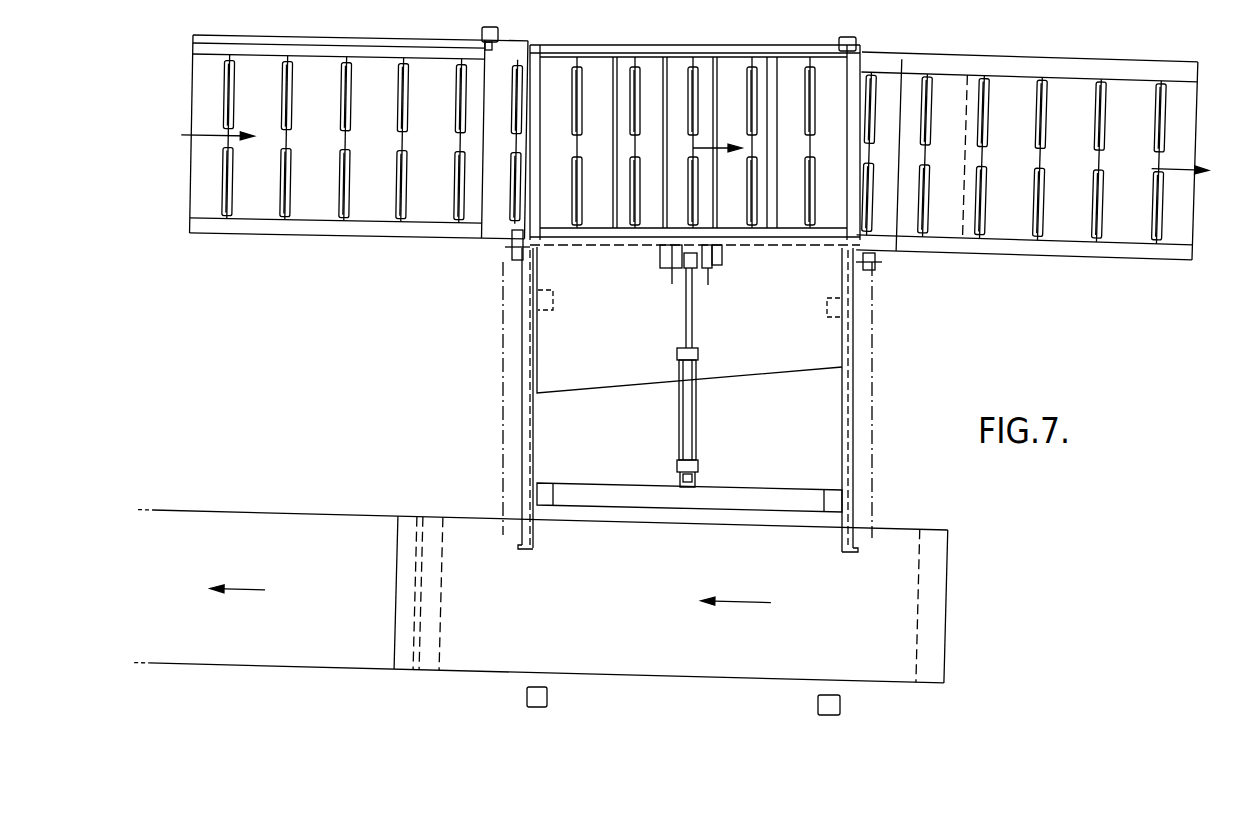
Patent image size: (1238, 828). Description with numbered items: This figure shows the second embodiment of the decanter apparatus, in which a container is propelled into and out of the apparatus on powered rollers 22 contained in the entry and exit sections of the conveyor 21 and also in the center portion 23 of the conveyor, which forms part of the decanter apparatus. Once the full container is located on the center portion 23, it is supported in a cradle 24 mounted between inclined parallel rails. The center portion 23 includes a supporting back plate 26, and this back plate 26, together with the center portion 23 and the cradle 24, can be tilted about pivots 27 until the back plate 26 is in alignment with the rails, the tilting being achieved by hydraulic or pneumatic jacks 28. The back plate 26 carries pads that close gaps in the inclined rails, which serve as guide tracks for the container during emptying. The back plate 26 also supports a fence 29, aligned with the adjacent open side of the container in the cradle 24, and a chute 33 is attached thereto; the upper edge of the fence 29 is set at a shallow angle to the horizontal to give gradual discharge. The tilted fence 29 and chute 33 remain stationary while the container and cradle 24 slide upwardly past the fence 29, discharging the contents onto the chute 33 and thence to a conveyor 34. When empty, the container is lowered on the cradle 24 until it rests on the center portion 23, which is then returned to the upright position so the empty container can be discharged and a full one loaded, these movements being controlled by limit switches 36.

The conveyor 21 is at (262, 208).
The powered rollers 22 is at (873, 200).
The center portion 23 is at (695, 160).
The cradle 24 is at (773, 118).
The supporting back plate 26 is at (513, 246).
The pivots 27 is at (868, 265).
The hydraulic or pneumatic jacks 28 is at (680, 373).
The fence 29 is at (778, 243).
The chute 33 is at (778, 345).
The conveyor 34 is at (846, 615).
The limit switches 36 is at (482, 33).